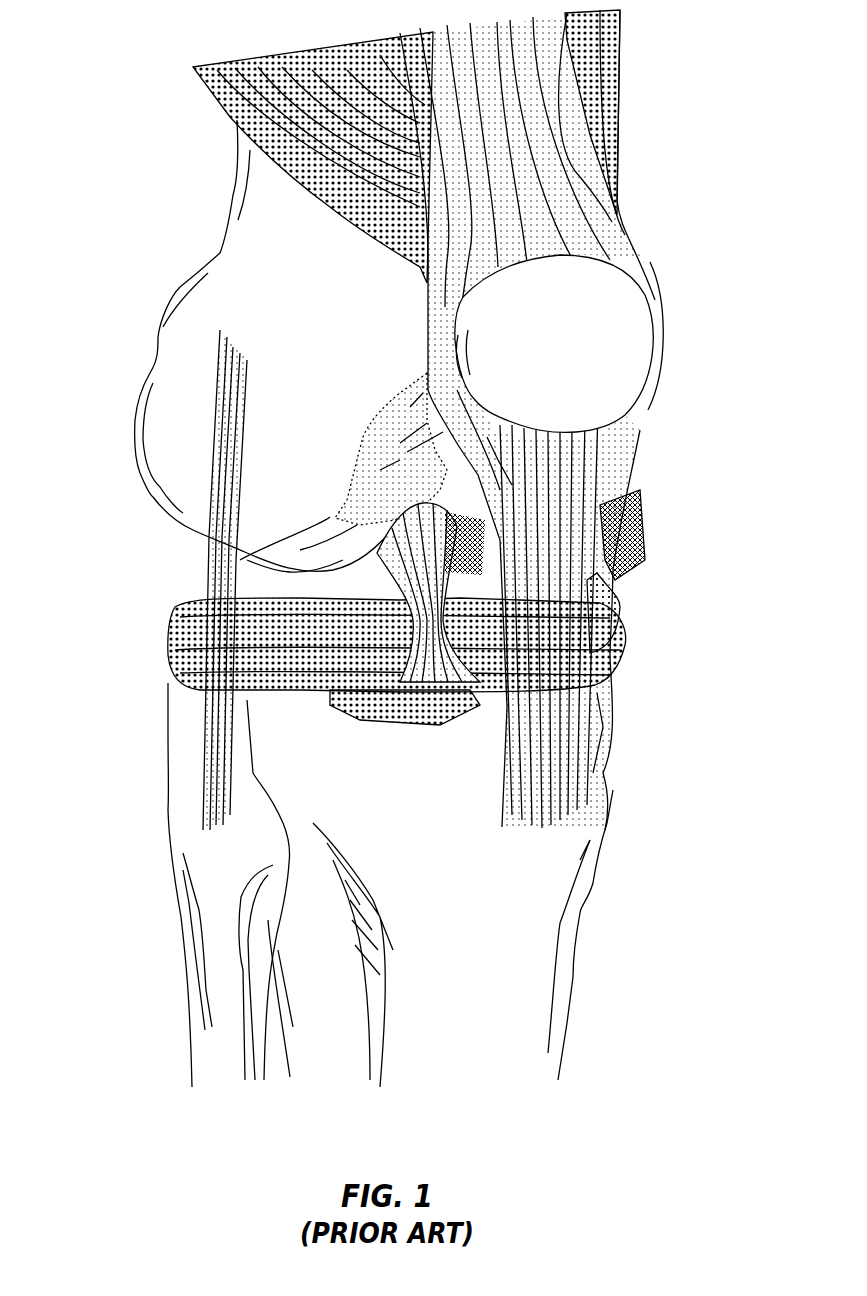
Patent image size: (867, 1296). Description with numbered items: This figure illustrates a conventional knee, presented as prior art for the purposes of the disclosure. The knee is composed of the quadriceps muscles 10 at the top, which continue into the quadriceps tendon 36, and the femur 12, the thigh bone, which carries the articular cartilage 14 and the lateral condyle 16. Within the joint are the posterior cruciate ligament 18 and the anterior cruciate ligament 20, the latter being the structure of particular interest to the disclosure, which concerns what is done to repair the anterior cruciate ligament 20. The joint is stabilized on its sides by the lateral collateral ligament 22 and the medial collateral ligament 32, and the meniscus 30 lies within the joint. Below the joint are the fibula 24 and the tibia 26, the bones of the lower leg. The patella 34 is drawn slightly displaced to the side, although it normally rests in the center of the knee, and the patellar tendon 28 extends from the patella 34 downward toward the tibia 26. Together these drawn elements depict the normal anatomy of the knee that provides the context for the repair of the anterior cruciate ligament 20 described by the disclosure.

The quadriceps muscles 10 is at (315, 114).
The femur 12 is at (315, 226).
The articular cartilage 14 is at (418, 448).
The lateral condyle 16 is at (348, 514).
The posterior cruciate ligament 18 is at (445, 558).
The anterior cruciate ligament 20 is at (245, 625).
The lateral collateral ligament 22 is at (230, 776).
The fibula 24 is at (218, 977).
The tibia 26 is at (480, 965).
The patellar tendon 28 is at (553, 705).
The meniscus 30 is at (623, 613).
The medial collateral ligament 32 is at (613, 543).
The patella 34 is at (610, 338).
The quadriceps tendon 36 is at (515, 152).